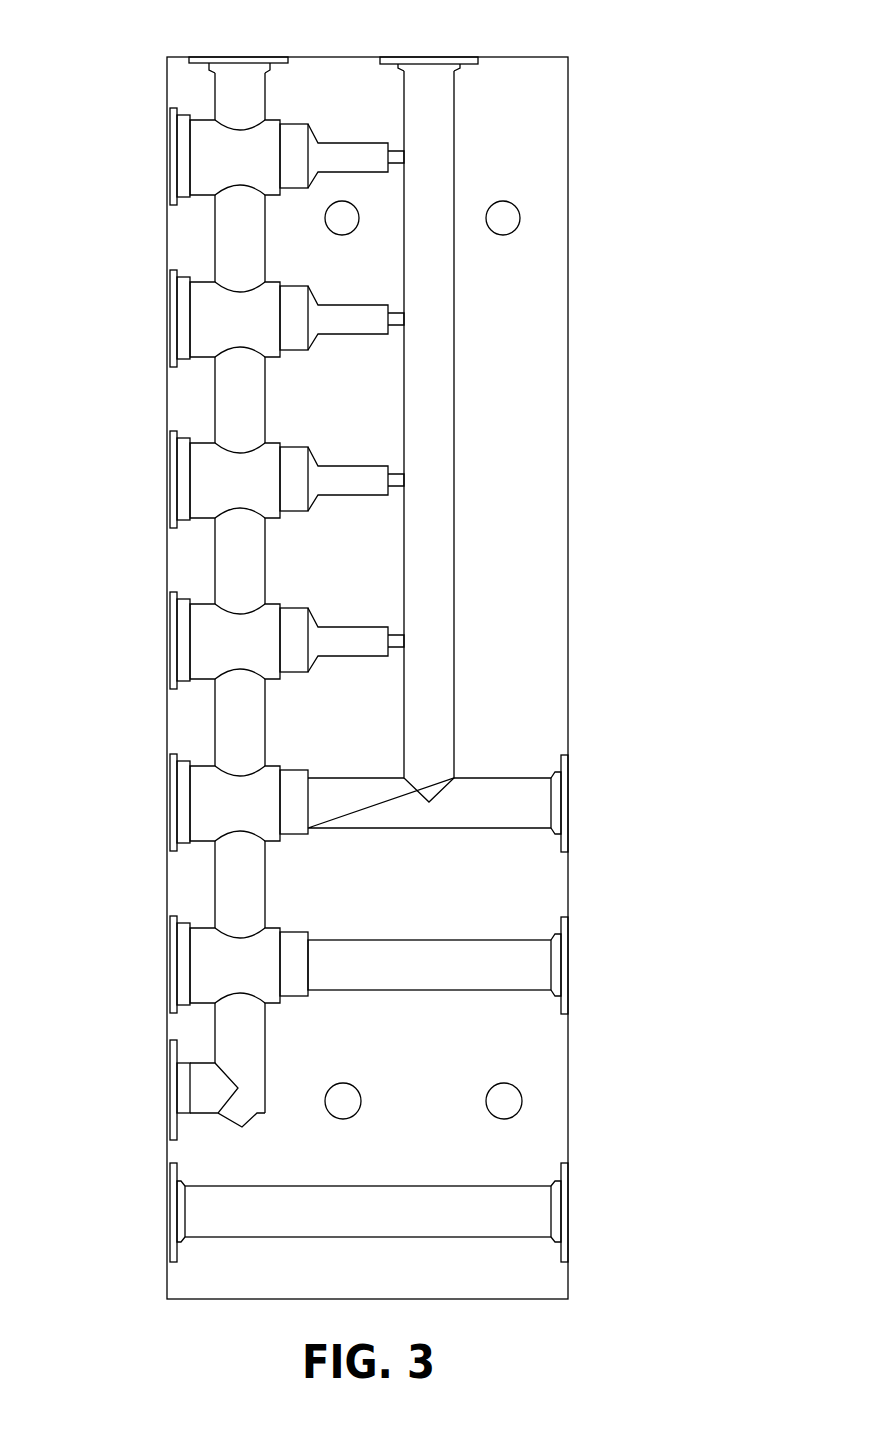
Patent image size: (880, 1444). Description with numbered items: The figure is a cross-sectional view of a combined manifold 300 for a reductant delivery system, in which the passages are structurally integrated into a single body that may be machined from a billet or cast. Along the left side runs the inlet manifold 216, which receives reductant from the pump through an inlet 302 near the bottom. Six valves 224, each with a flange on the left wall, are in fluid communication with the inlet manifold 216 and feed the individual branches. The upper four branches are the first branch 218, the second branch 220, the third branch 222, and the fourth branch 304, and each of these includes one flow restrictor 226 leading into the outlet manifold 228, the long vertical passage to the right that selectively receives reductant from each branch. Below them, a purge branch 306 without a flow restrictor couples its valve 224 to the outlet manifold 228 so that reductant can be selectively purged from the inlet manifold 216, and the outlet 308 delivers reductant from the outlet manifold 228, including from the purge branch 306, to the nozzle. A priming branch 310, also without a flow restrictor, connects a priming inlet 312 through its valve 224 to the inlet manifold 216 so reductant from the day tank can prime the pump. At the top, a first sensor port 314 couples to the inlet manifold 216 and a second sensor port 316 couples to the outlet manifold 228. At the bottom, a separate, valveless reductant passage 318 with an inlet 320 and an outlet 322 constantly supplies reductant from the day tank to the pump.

The combined manifold 300 is at (688, 82).
The first sensor port 314 is at (230, 60).
The second sensor port 316 is at (447, 60).
The inlet manifold 216 is at (207, 88).
The outlet manifold 228 is at (464, 504).
The first branch 218 is at (332, 180).
The second branch 220 is at (332, 341).
The third branch 222 is at (332, 503).
The fourth branch 304 is at (332, 664).
The purge branch 306 is at (345, 835).
The priming branch 310 is at (345, 996).
The flow restrictor 226 is at (352, 143).
The valve 224 is at (182, 172).
The outlet 308 is at (565, 809).
The priming inlet 312 is at (565, 975).
The inlet 302 is at (183, 1088).
The reductant passage 318 is at (392, 1182).
The outlet 322 is at (183, 1217).
The inlet 320 is at (565, 1223).